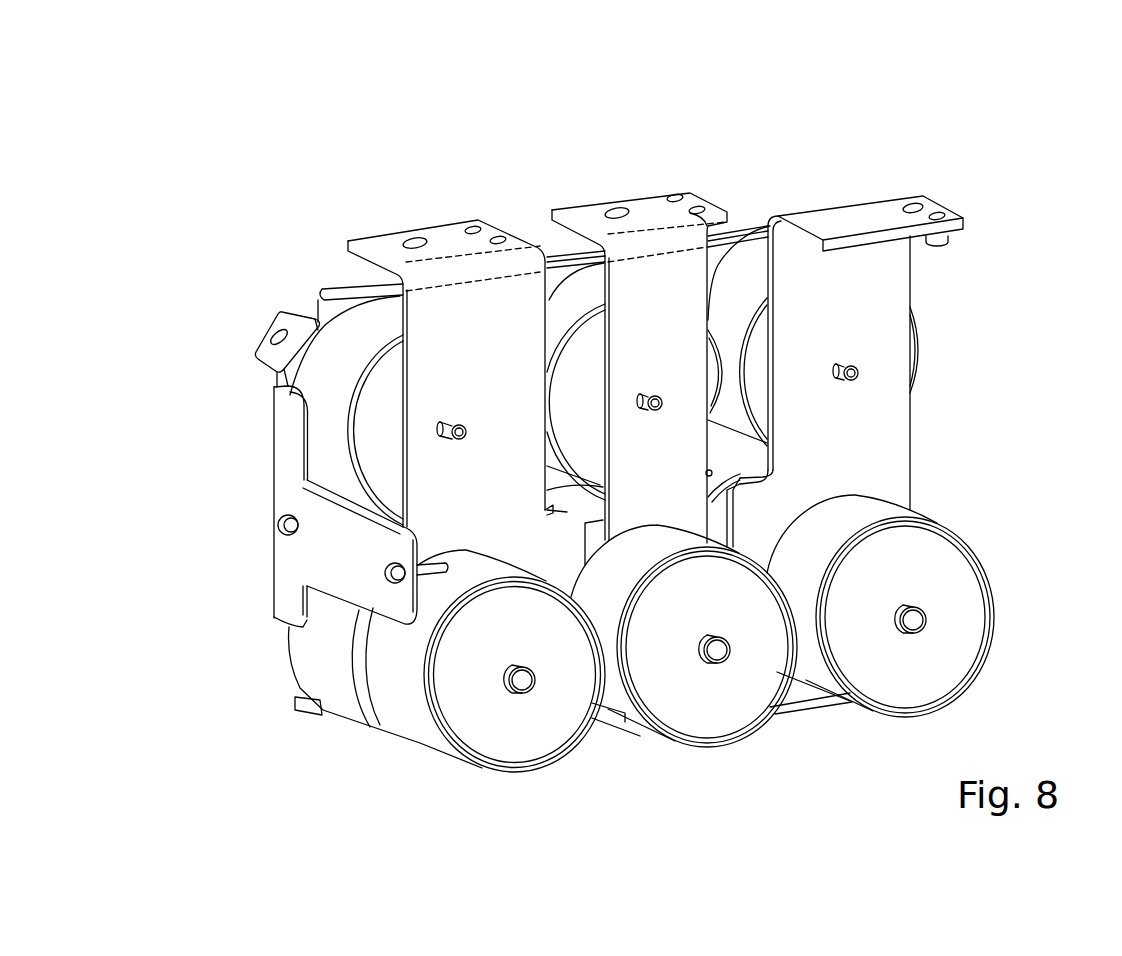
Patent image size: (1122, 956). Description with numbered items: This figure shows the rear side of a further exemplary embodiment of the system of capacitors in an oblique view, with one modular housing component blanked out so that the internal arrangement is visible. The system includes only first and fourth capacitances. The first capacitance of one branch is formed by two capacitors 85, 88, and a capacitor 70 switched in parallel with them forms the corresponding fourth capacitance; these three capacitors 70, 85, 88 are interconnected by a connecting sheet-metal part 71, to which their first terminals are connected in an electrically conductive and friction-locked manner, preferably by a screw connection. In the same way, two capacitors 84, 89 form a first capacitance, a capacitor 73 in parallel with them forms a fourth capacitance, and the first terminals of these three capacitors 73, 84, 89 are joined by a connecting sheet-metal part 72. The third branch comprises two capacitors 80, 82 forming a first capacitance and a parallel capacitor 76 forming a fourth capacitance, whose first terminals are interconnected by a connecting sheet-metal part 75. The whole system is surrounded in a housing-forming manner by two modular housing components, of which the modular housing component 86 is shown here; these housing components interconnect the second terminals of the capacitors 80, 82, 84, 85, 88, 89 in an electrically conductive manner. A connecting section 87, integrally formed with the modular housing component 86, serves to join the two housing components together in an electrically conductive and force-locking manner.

The capacitor 70 is at (745, 288).
The connecting sheet-metal part 71 is at (908, 207).
The connecting sheet-metal part 72 is at (643, 212).
The capacitor 73 is at (576, 299).
The connecting sheet-metal part 75 is at (451, 242).
The capacitor 76 is at (345, 358).
The capacitor 80 is at (482, 718).
The capacitor 82 is at (323, 652).
The capacitor 84 is at (590, 508).
The capacitor 85 is at (720, 515).
The modular housing component 86 is at (720, 257).
The connecting section 87 is at (313, 562).
The capacitor 88 is at (956, 607).
The capacitor 89 is at (718, 696).